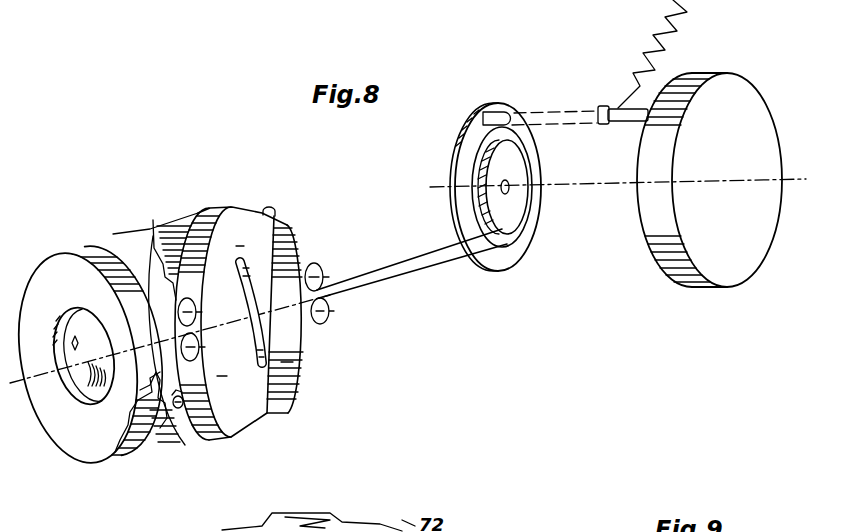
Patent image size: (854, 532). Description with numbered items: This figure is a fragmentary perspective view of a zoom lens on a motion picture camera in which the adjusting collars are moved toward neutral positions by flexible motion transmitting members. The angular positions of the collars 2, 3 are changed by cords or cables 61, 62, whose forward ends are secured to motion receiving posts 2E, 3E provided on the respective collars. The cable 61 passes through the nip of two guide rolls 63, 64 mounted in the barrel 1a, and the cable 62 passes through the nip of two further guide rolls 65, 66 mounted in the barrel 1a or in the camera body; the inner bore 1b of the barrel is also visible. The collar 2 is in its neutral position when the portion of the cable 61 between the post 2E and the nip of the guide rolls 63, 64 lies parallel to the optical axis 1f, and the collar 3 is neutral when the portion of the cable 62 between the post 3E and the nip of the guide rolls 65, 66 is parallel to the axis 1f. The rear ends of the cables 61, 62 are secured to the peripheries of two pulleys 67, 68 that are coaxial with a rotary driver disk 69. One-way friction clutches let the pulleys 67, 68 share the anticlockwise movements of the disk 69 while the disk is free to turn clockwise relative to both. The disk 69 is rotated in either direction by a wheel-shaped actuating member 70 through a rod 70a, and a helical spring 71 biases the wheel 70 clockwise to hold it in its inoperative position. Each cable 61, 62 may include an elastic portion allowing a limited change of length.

The barrel 1a is at (123, 247).
The lens body inner bore 1b is at (90, 400).
The optical axis 1f is at (14, 381).
The collar 2 is at (57, 270).
The motion receiving post 2E is at (173, 410).
The collar 3 is at (219, 208).
The motion receiving post 3E is at (270, 209).
The flexible motion transmitting member 61 is at (427, 265).
The flexible motion transmitting member 62 is at (383, 268).
The guide roll 63 is at (159, 248).
The guide roll 64 is at (212, 432).
The guide roll 65 is at (316, 263).
The guide roll 66 is at (322, 324).
The pulley 67 is at (515, 232).
The pulley 68 is at (518, 162).
The rotary driver disk 69 is at (537, 225).
The wheel-shaped actuating member 70 is at (737, 270).
The rod 70a is at (627, 125).
The helical spring 71 is at (690, 22).